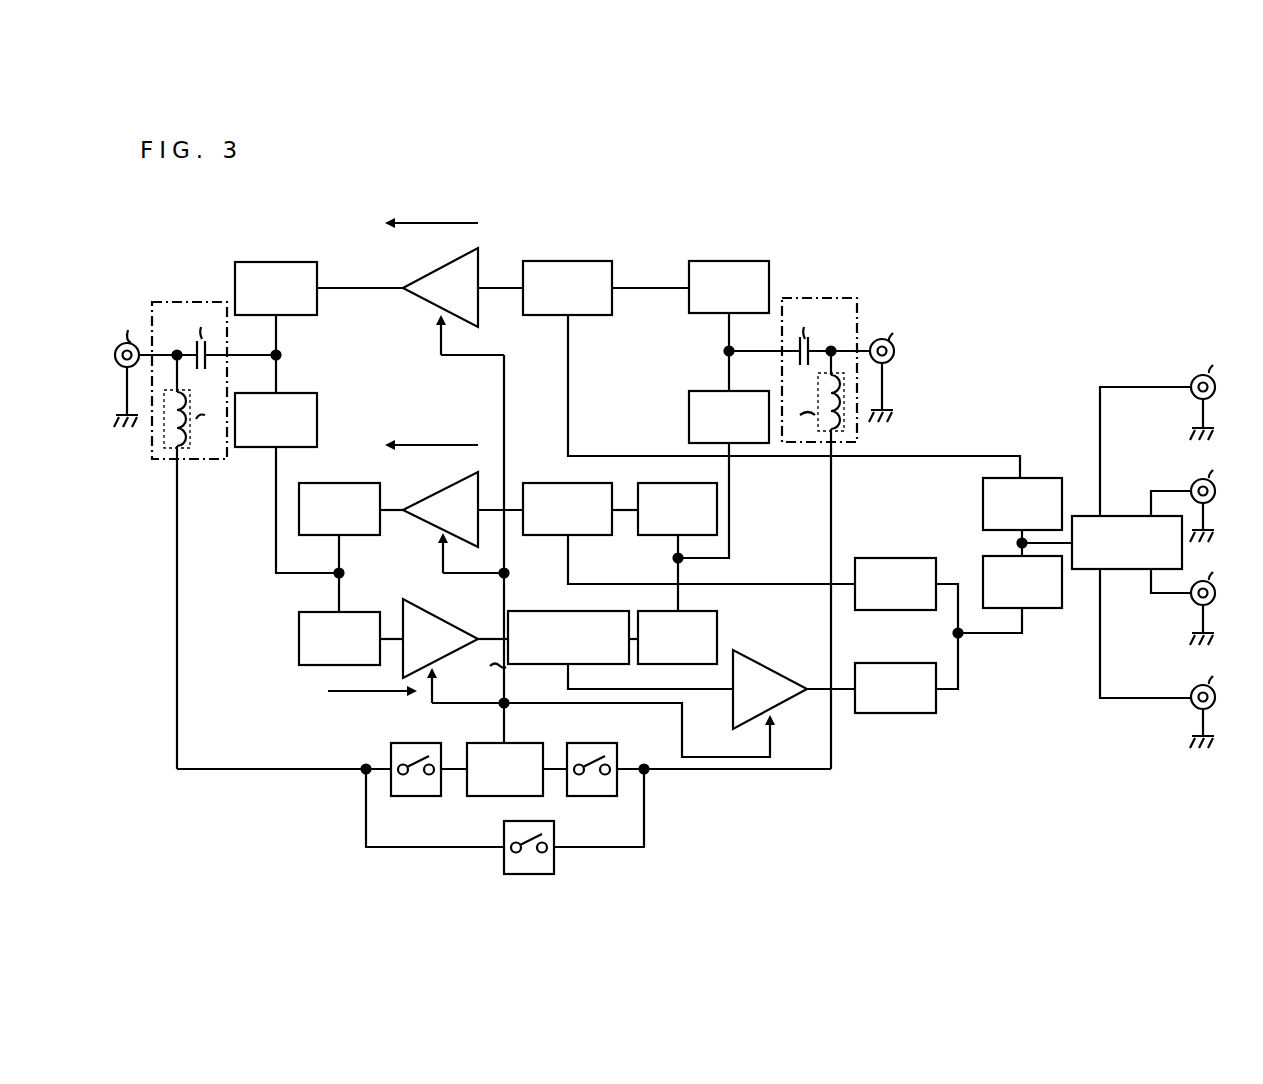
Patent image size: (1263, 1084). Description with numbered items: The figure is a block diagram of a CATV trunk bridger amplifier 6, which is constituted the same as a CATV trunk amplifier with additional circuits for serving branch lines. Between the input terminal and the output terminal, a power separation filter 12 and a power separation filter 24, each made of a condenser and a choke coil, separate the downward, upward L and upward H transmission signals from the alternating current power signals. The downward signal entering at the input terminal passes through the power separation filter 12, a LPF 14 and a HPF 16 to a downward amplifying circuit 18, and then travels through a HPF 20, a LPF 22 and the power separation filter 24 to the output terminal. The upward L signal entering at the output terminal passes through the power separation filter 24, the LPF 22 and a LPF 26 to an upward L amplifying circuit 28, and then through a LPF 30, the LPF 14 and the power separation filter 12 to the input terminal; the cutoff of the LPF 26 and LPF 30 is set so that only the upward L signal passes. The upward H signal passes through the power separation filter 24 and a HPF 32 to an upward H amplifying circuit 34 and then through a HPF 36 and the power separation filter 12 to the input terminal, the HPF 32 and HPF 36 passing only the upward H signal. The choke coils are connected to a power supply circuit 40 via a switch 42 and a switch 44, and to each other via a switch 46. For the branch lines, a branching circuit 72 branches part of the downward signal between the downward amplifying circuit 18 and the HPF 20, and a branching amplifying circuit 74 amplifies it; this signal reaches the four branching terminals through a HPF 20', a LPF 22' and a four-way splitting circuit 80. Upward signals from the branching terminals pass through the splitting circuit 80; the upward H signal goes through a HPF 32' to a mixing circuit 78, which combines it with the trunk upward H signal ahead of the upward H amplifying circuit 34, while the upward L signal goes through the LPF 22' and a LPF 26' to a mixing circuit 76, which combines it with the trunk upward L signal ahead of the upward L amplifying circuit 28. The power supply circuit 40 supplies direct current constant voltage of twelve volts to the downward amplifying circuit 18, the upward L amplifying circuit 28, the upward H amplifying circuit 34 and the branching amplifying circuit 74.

The CATV trunk bridger amplifier 6 is at (1145, 202).
The power separation filter 12 is at (173, 302).
The low pass filter 14 is at (290, 393).
The high pass filter 16 is at (316, 604).
The downward amplifying circuit 18 is at (468, 616).
The high pass filter 20 is at (692, 624).
The high pass filter 20' is at (892, 673).
The low pass filter 22 is at (722, 464).
The low pass filter 22' is at (1003, 582).
The power separation filter 24 is at (831, 298).
The low pass filter 26 is at (681, 534).
The low pass filter 26' is at (905, 608).
The upward L amplifying circuit 28 is at (423, 496).
The low pass filter 30 is at (348, 483).
The high pass filter 32 is at (723, 312).
The high pass filter 32' is at (1009, 504).
The upward H amplifying circuit 34 is at (408, 285).
The high pass filter 36 is at (290, 262).
The power supply circuit 40 is at (523, 743).
The switch 42 is at (433, 743).
The switch 44 is at (601, 743).
The switch 46 is at (538, 821).
The branching circuit 72 is at (571, 610).
The branching amplifying circuit 74 is at (770, 646).
The mixing circuit 76 is at (571, 482).
The mixing circuit 78 is at (571, 258).
The splitting circuit 80 is at (1129, 514).